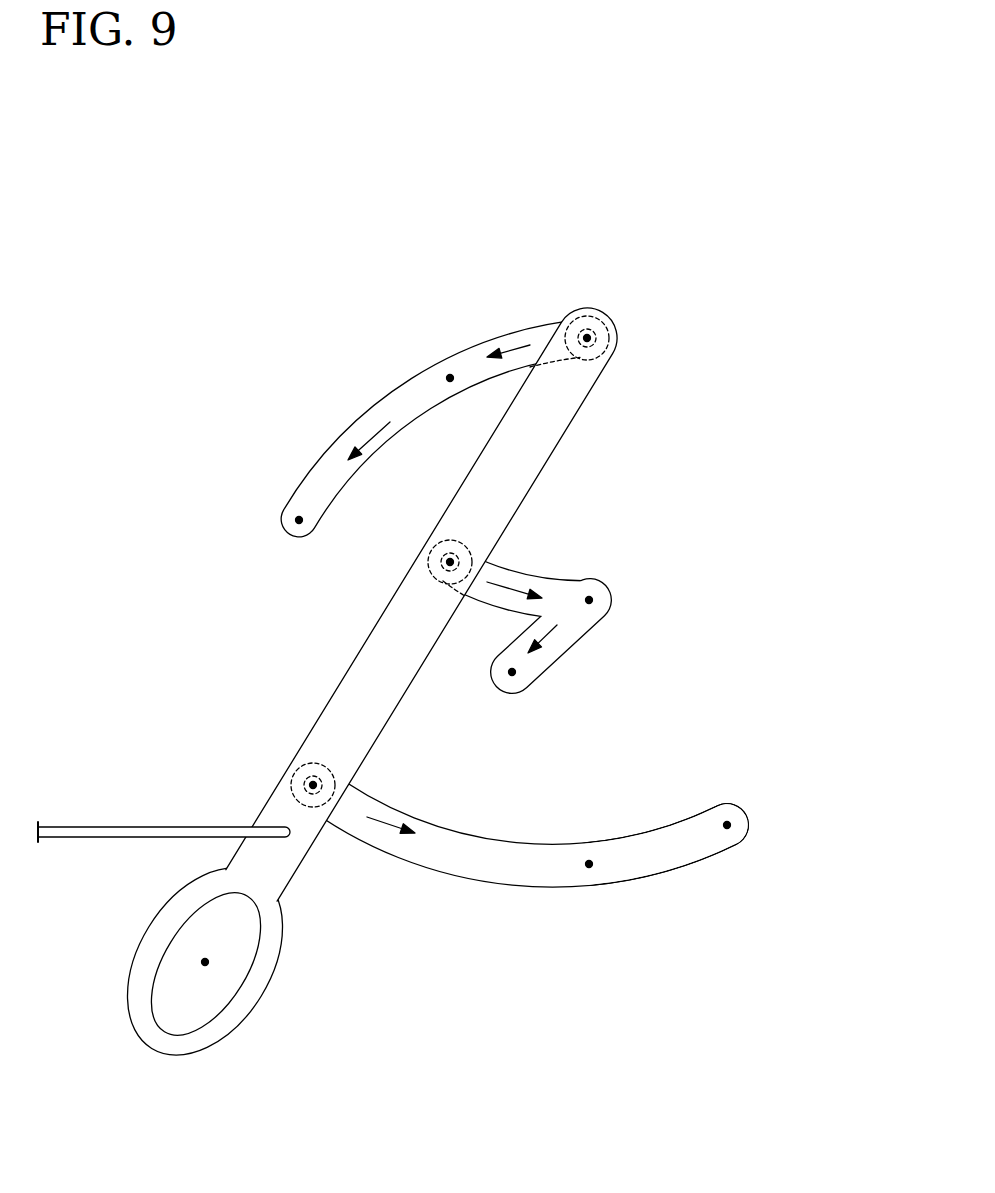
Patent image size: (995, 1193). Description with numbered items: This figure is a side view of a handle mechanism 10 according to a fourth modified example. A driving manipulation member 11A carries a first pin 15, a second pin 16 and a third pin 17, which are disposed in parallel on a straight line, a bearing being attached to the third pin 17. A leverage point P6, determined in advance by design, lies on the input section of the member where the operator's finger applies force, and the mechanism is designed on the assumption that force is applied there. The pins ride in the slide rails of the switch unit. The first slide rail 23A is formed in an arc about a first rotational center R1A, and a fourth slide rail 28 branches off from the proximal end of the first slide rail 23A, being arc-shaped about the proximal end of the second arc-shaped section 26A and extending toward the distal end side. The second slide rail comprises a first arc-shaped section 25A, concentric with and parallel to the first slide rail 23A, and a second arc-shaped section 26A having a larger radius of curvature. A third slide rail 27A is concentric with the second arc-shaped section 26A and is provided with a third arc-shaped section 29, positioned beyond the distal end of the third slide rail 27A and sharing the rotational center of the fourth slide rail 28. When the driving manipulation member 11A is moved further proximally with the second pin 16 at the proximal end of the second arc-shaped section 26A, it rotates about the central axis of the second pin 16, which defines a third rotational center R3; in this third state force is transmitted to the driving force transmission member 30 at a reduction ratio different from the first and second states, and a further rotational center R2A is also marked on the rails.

The handle mechanism 10 is at (682, 230).
The third slide rail 27A is at (440, 389).
The third arc-shaped section 29 is at (359, 432).
The first rotational center R1A is at (629, 373).
The third pin 17 is at (590, 357).
The first slide rail 23A is at (556, 601).
The second rotation center R2A is at (591, 600).
The fourth slide rail 28 is at (553, 648).
The first pin 15 is at (442, 578).
The second pin 16 is at (312, 770).
The driving force transmission member 30 is at (125, 827).
The driving manipulation member 11A is at (356, 695).
The leverage point P6 is at (207, 962).
The first arc-shaped section 25A is at (520, 874).
The second arc-shaped section 26A is at (660, 872).
The third rotational center R3 is at (729, 825).